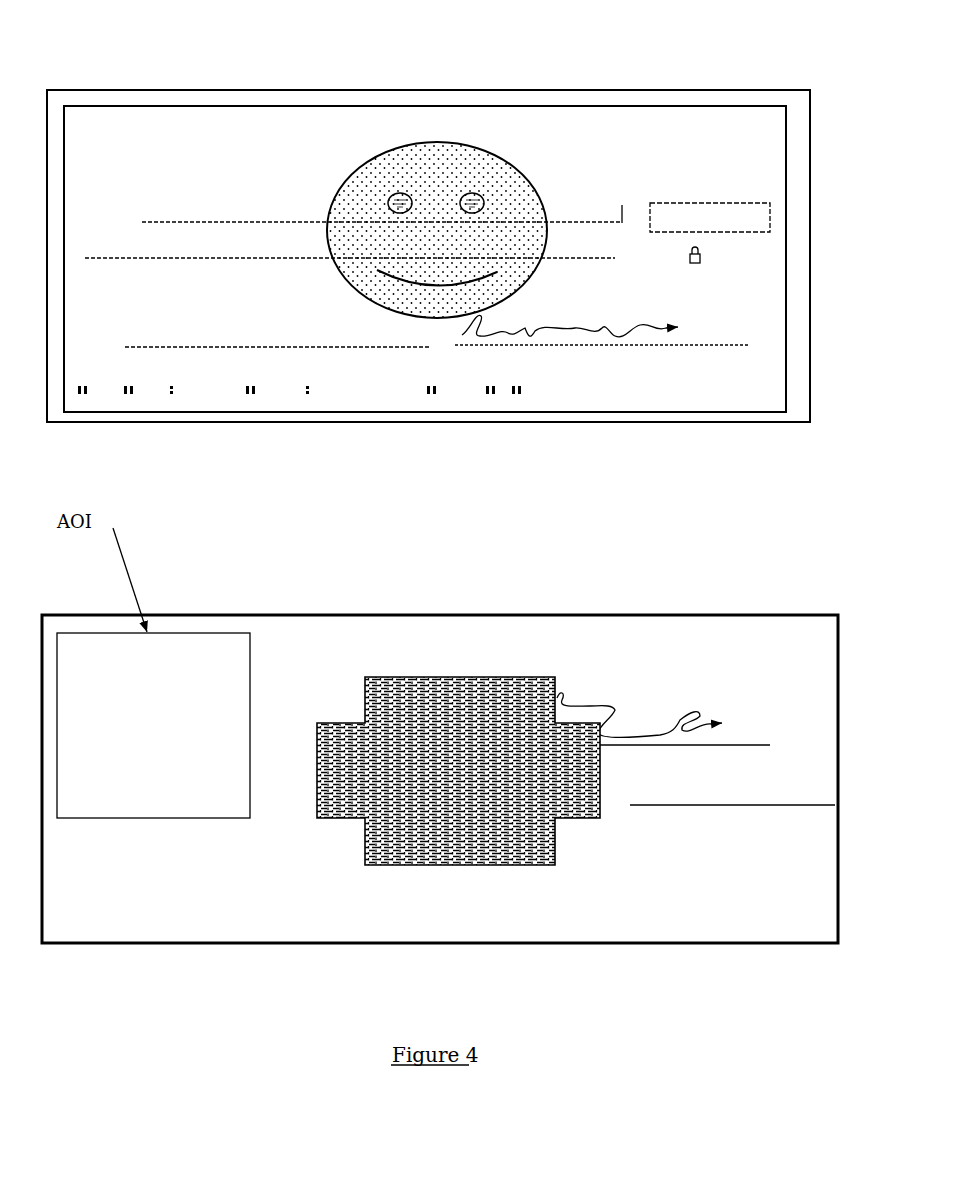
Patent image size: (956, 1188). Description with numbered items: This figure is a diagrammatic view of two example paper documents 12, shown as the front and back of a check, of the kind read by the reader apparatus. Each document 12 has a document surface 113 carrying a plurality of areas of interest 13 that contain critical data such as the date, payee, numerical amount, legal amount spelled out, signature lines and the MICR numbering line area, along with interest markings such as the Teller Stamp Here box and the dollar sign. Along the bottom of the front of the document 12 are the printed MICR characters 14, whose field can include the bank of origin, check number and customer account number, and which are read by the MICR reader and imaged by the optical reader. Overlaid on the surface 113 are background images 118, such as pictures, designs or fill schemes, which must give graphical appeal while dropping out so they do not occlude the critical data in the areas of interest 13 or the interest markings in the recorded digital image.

The paper document 12 is at (740, 468).
The areas of interest 13 is at (442, 107).
The MICR characters 14 is at (457, 400).
The document surface 113 is at (728, 384).
The background images 118 is at (422, 712).